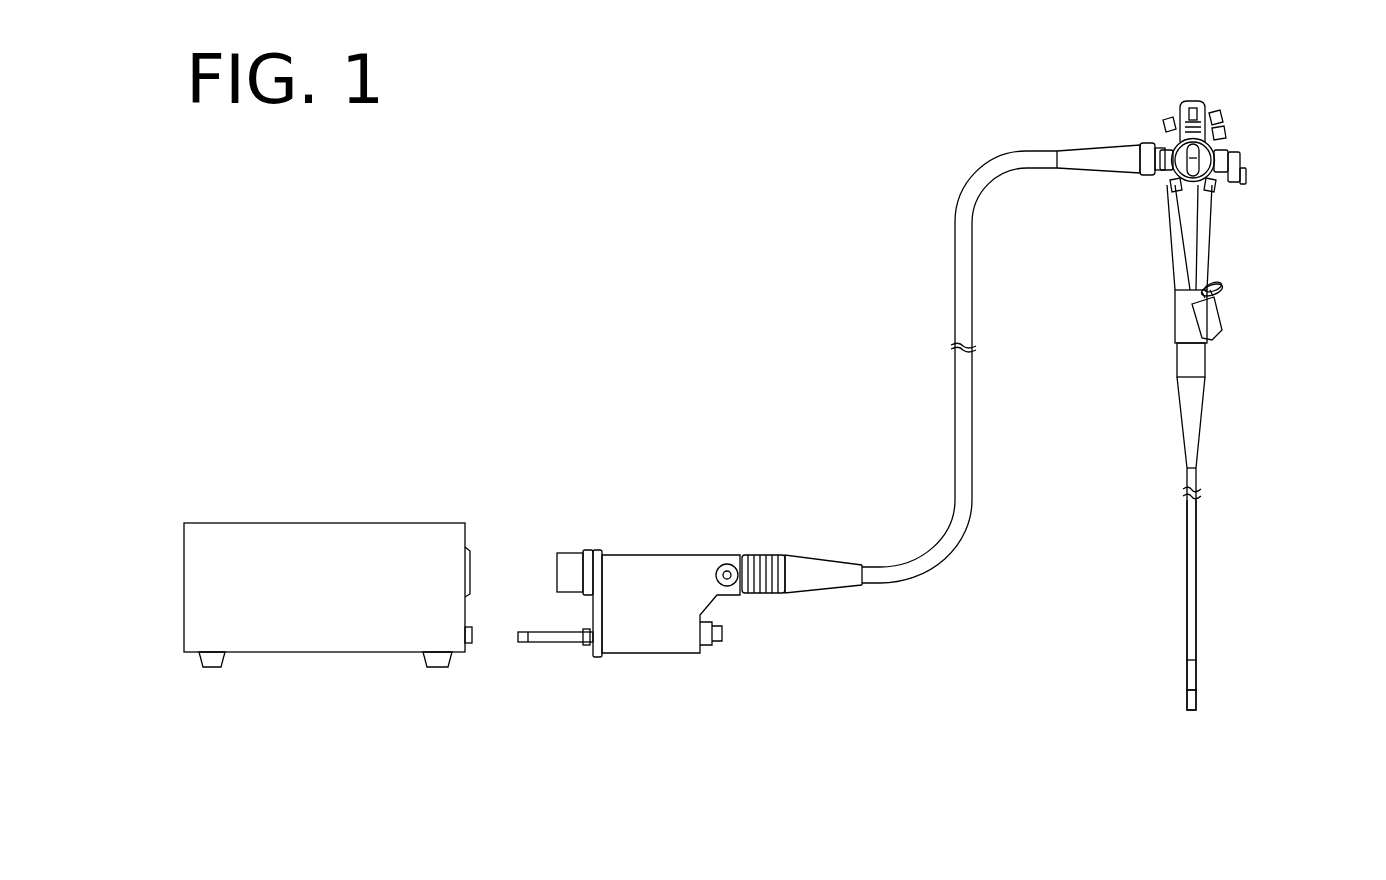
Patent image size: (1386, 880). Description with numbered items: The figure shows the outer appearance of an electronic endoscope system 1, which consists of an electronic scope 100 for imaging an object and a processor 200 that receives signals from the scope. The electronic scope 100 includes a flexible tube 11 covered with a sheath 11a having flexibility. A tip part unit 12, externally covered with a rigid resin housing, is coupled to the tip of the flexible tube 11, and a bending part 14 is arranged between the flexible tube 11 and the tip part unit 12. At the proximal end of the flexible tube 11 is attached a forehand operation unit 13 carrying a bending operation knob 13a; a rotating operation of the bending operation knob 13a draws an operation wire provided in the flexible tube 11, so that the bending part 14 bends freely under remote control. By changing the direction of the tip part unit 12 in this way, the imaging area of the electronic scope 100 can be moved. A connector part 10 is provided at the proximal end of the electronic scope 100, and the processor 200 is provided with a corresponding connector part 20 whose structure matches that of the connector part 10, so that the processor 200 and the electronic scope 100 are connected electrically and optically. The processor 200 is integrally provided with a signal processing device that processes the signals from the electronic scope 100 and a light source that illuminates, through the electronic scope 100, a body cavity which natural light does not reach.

The electronic endoscope system 1 is at (526, 230).
The connector part 10 is at (673, 551).
The flexible tube 11 is at (1245, 589).
The sheath 11a is at (1193, 570).
The tip part unit 12 is at (1187, 700).
The forehand operation unit 13 is at (1228, 122).
The bending operation knob 13a is at (1182, 108).
The bending part 14 is at (1193, 673).
The connector part 20 is at (481, 602).
The electronic scope 100 is at (972, 148).
The processor 200 is at (301, 520).